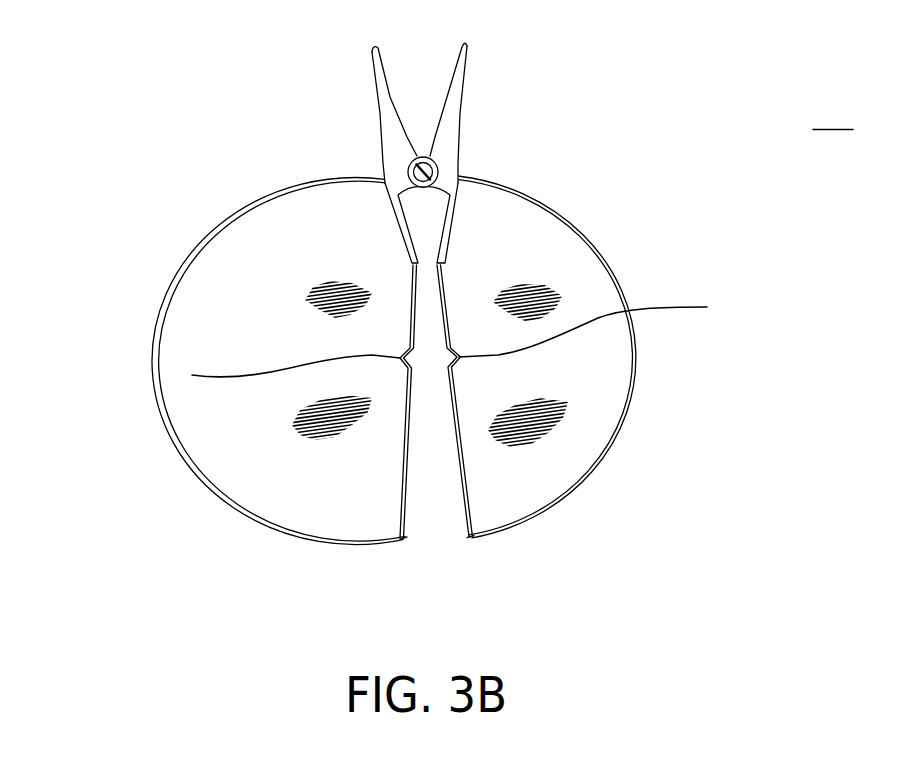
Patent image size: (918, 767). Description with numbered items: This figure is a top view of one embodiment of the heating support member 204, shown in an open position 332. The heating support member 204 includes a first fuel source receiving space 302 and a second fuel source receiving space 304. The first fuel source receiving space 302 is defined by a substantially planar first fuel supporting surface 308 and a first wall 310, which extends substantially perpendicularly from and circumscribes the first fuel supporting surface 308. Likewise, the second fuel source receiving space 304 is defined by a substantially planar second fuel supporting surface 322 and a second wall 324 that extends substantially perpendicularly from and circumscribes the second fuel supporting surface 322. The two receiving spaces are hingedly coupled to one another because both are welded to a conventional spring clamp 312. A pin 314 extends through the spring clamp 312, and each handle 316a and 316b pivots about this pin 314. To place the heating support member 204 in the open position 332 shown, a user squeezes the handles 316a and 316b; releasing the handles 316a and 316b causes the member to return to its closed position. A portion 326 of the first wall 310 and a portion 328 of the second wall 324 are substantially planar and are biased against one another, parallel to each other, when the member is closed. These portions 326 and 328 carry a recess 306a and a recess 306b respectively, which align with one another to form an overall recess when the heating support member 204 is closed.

The heating support member 204 is at (126, 172).
The first fuel source receiving space 302 is at (262, 313).
The second fuel source receiving space 304 is at (583, 270).
The recess 306a is at (260, 372).
The recess 306b is at (620, 329).
The first fuel supporting surface 308 is at (302, 253).
The first wall 310 is at (243, 422).
The spring clamp 312 is at (395, 174).
The pin 314 is at (418, 157).
The handle 316a is at (378, 78).
The handle 316b is at (458, 72).
The second fuel supporting surface 322 is at (527, 225).
The second wall 324 is at (592, 470).
The portion of the first wall 326 is at (407, 452).
The portion of the second wall 328 is at (463, 461).
The open position 332 is at (833, 118).